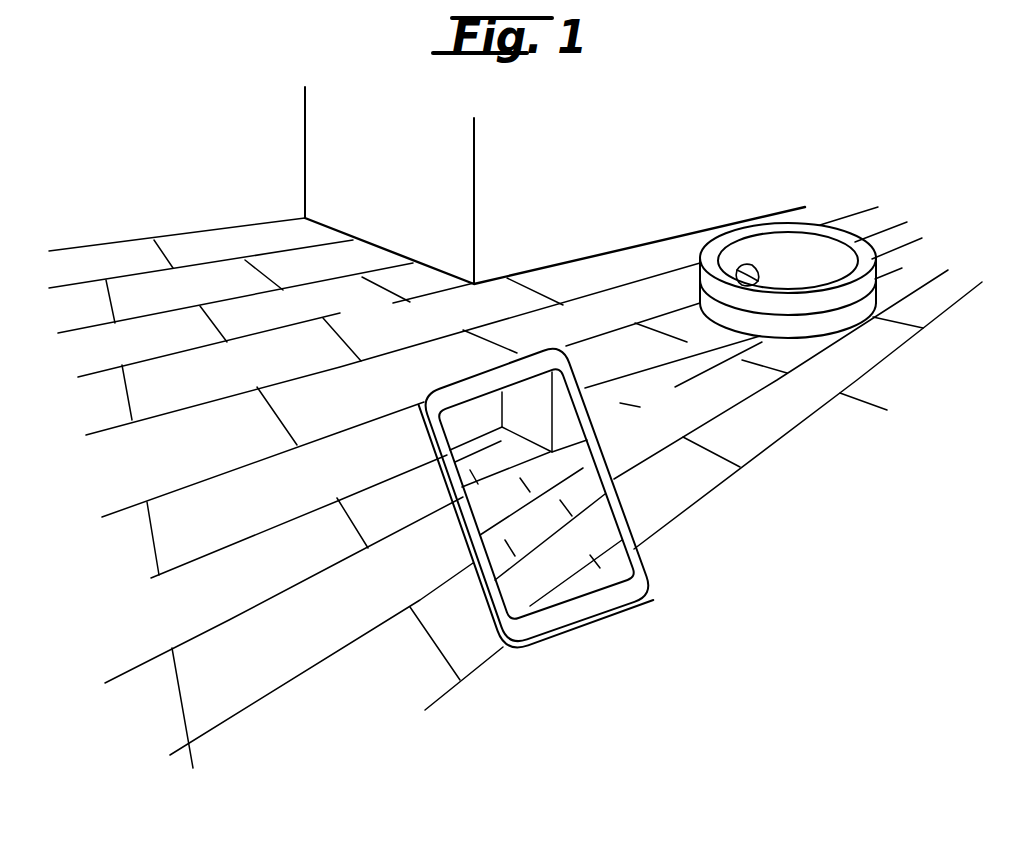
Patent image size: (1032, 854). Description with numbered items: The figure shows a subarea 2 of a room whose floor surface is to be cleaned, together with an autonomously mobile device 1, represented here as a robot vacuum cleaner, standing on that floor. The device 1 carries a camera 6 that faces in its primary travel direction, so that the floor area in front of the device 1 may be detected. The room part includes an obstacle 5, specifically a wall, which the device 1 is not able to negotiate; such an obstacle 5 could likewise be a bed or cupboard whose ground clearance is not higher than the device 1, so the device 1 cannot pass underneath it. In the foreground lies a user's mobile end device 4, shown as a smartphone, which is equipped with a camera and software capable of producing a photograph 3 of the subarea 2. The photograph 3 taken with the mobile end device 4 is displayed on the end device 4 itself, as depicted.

The autonomously mobile device 1 is at (778, 248).
The subarea 2 is at (291, 252).
The photograph 3 is at (590, 500).
The mobile end device 4 is at (597, 605).
The obstacle 5 is at (551, 196).
The camera 6 is at (736, 268).